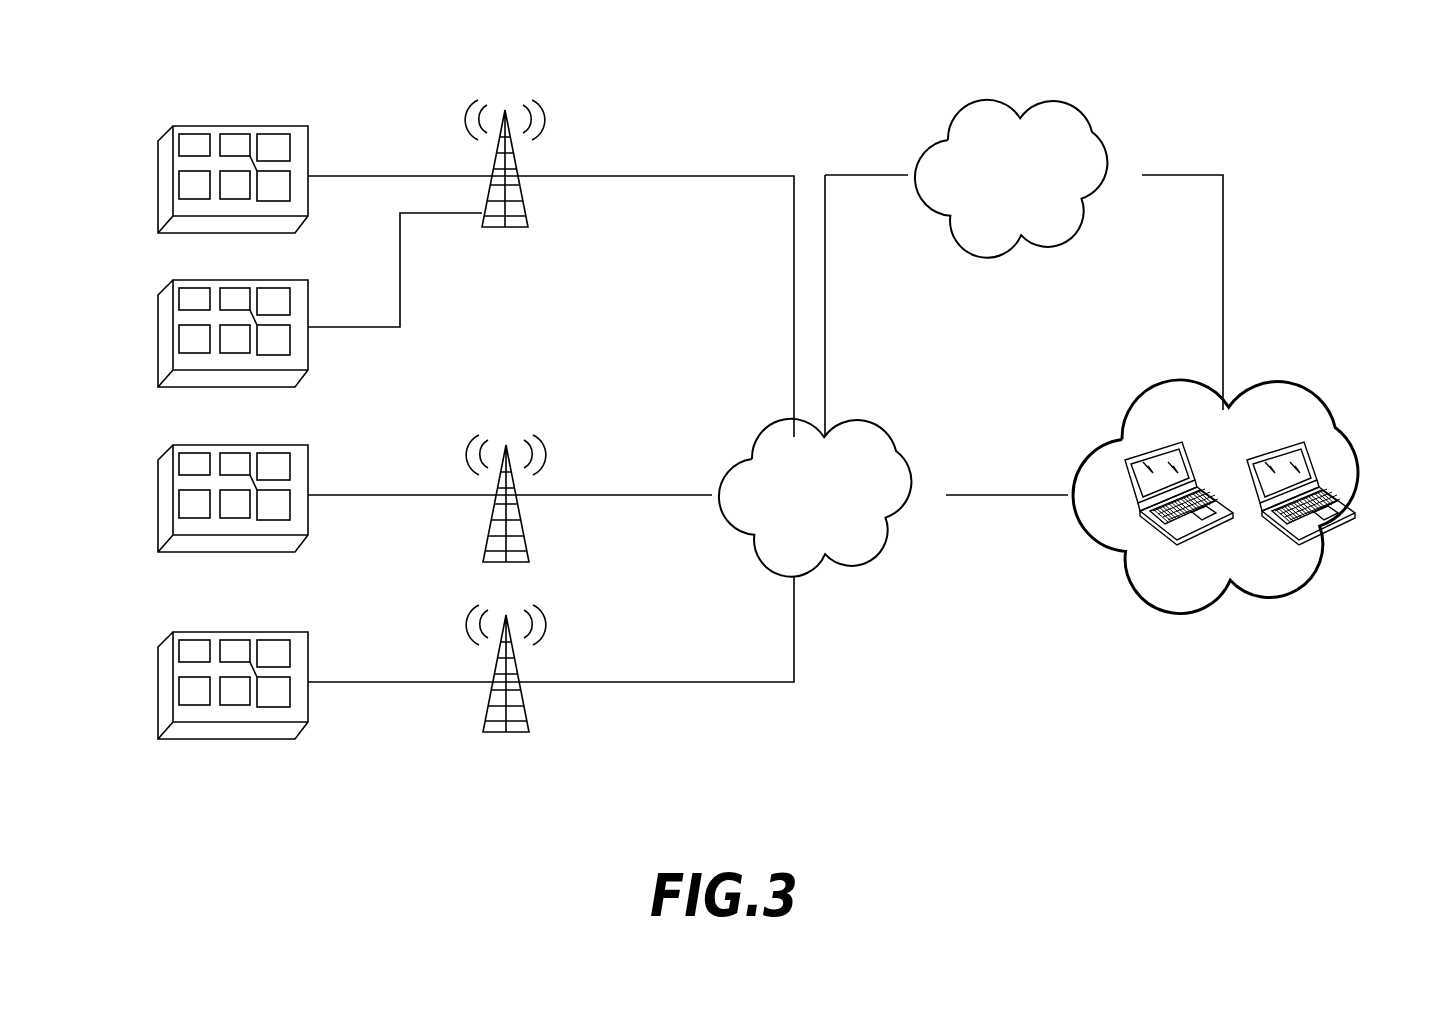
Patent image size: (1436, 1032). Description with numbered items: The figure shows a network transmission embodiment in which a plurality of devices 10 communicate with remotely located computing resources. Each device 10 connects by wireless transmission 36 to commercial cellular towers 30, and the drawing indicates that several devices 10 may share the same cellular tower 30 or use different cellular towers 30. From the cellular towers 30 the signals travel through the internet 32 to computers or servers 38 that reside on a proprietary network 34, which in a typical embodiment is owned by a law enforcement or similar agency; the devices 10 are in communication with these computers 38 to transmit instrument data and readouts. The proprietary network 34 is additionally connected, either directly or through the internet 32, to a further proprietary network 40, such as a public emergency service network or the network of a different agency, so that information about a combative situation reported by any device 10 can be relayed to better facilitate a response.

The devices 10 is at (308, 189).
The commercial cellular towers 30 is at (528, 213).
The internet 32 is at (778, 421).
The proprietary network 34 is at (1302, 388).
The wireless transmission 36 is at (402, 175).
The computers or servers 38 is at (1148, 450).
The further proprietary network 40 is at (985, 102).